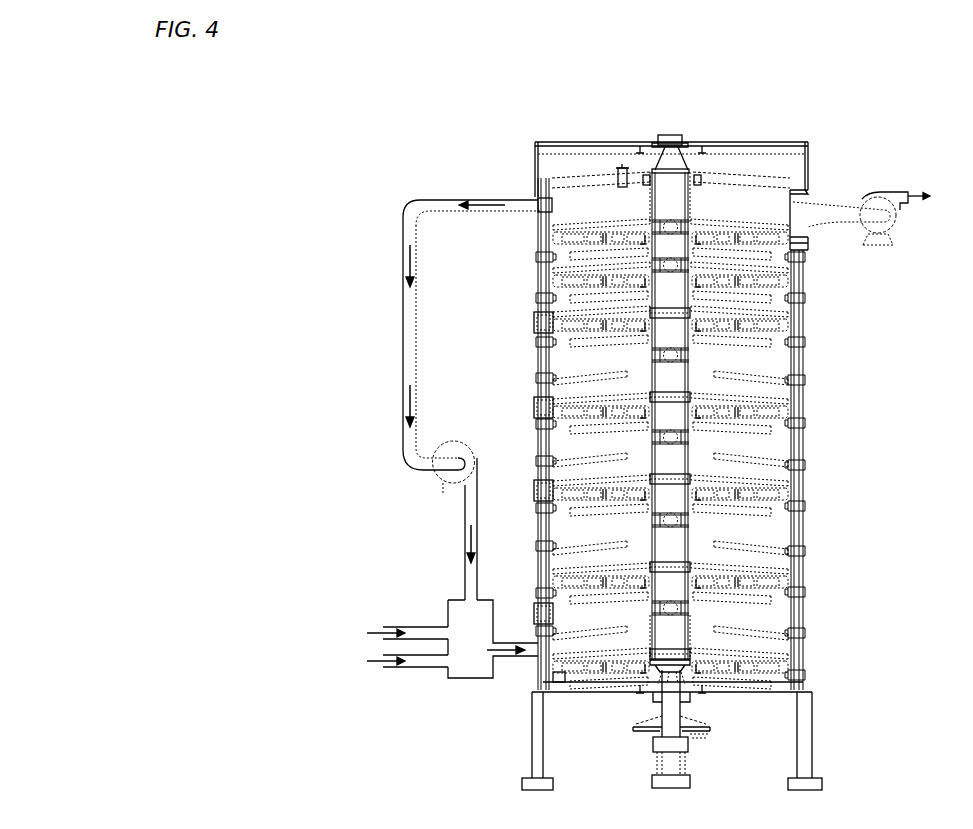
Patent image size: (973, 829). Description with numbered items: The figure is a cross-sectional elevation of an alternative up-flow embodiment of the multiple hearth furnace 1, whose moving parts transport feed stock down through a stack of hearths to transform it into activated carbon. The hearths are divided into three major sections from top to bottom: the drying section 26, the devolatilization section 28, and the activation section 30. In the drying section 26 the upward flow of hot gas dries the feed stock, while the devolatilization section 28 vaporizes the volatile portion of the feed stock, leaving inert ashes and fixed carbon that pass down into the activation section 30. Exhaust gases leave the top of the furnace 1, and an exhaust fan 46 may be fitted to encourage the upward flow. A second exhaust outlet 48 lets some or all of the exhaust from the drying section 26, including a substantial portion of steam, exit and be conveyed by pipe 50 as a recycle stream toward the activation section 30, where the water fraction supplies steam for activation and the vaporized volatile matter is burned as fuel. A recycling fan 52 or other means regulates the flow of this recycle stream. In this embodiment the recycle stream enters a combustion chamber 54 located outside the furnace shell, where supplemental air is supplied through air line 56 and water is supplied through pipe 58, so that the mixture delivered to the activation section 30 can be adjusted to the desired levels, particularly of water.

The multiple hearth furnace 1 is at (836, 114).
The drying section 26 is at (822, 227).
The devolatilization section 28 is at (822, 393).
The activation section 30 is at (822, 553).
The exhaust fan 46 is at (900, 219).
The second exhaust outlet 48 is at (540, 205).
The pipe 50 is at (403, 398).
The recycling fan 52 is at (478, 463).
The combustion chamber 54 is at (465, 668).
The air line 56 is at (423, 625).
The pipe 58 is at (433, 668).